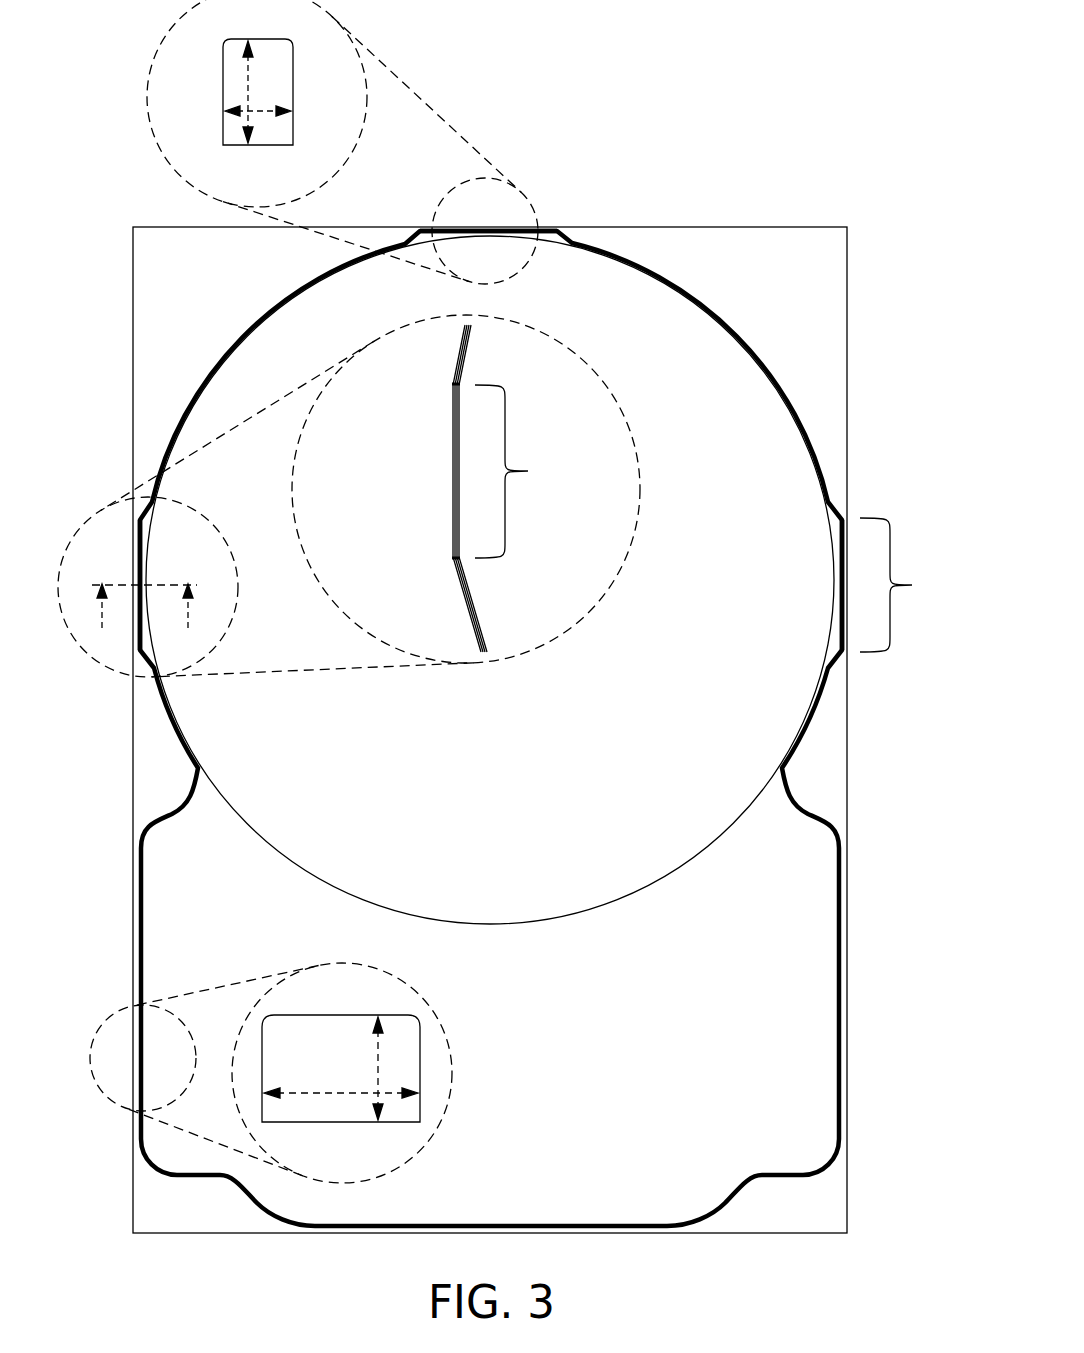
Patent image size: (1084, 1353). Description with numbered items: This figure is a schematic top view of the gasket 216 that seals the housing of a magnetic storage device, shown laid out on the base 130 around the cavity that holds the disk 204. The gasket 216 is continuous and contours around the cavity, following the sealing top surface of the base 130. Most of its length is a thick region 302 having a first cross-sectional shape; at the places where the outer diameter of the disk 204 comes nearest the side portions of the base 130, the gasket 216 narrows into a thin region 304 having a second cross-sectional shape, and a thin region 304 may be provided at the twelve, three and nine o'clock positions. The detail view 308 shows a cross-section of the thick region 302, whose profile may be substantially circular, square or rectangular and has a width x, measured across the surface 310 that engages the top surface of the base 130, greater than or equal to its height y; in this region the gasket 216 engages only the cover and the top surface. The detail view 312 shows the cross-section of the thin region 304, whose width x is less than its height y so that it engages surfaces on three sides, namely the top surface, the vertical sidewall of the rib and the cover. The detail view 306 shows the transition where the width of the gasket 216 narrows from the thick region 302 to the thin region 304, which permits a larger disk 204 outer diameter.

The base 130 is at (763, 227).
The disk 204 is at (747, 810).
The gasket 216 is at (838, 1057).
The thick region 302 is at (207, 377).
The thin region 304 is at (717, 518).
The detail view 306 is at (612, 583).
The detail view 308 is at (432, 1135).
The surface 310 is at (297, 1122).
The detail view 312 is at (150, 113).